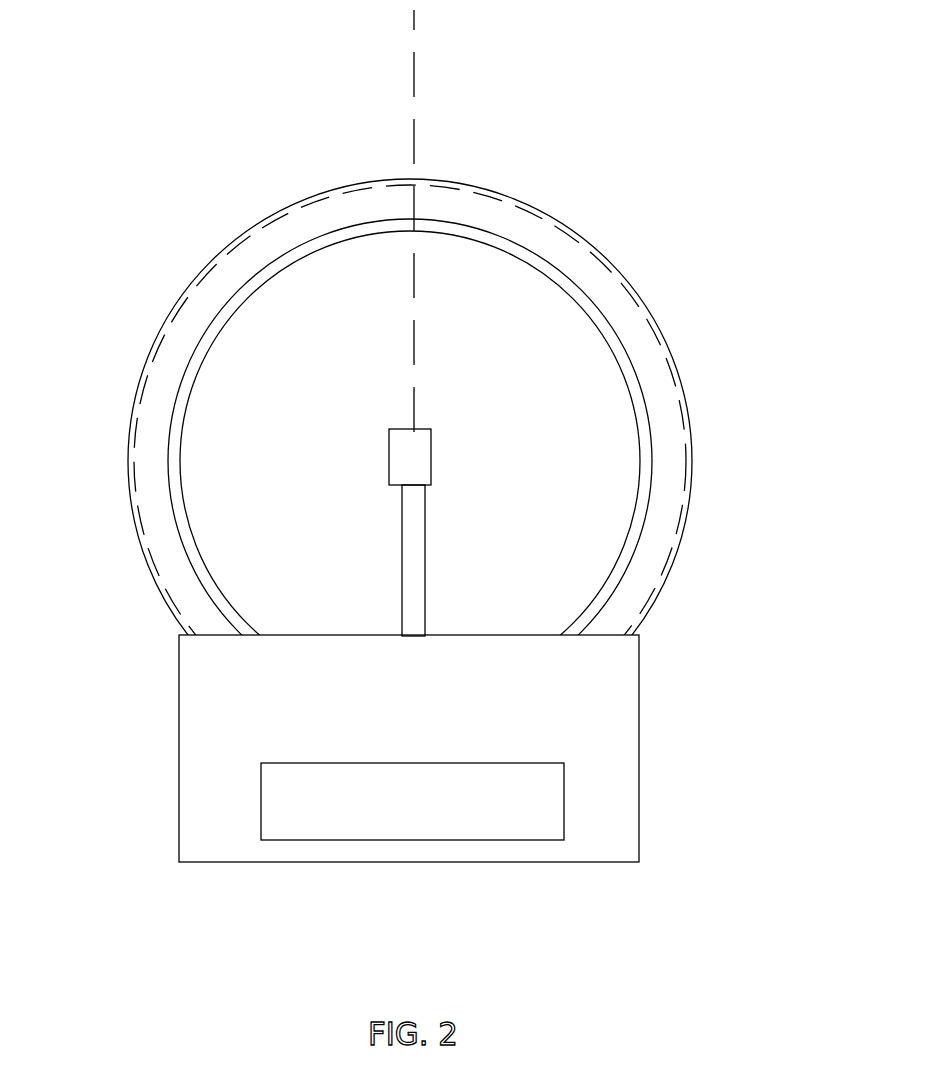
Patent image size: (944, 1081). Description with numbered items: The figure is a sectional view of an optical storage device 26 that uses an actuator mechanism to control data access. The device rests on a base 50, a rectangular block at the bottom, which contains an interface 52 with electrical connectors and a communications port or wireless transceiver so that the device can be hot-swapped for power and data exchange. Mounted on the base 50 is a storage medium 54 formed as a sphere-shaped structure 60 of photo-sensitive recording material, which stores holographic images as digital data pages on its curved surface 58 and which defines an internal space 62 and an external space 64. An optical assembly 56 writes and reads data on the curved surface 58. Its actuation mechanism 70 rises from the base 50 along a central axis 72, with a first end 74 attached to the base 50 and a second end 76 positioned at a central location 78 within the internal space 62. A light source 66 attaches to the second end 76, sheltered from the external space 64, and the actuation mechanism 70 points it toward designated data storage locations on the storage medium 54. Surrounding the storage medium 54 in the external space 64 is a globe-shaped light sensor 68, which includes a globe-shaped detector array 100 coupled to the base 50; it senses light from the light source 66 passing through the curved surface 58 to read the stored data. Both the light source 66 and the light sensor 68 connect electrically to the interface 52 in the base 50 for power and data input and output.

The optical storage device 26 is at (438, 436).
The central axis 72 is at (414, 76).
The storage medium 54 is at (543, 229).
The curved surface 58 is at (588, 282).
The sphere-shaped structure 60 is at (633, 324).
The detector array 100 is at (694, 365).
The light sensor 68 is at (699, 530).
The external space 64 is at (83, 323).
The internal space 62 is at (343, 367).
The optical assembly 56 is at (468, 410).
The light source 66 is at (445, 489).
The central location 78 is at (364, 442).
The second end 76 is at (376, 483).
The actuation mechanism 70 is at (376, 553).
The first end 74 is at (376, 611).
The base 50 is at (167, 732).
The interface 52 is at (398, 813).